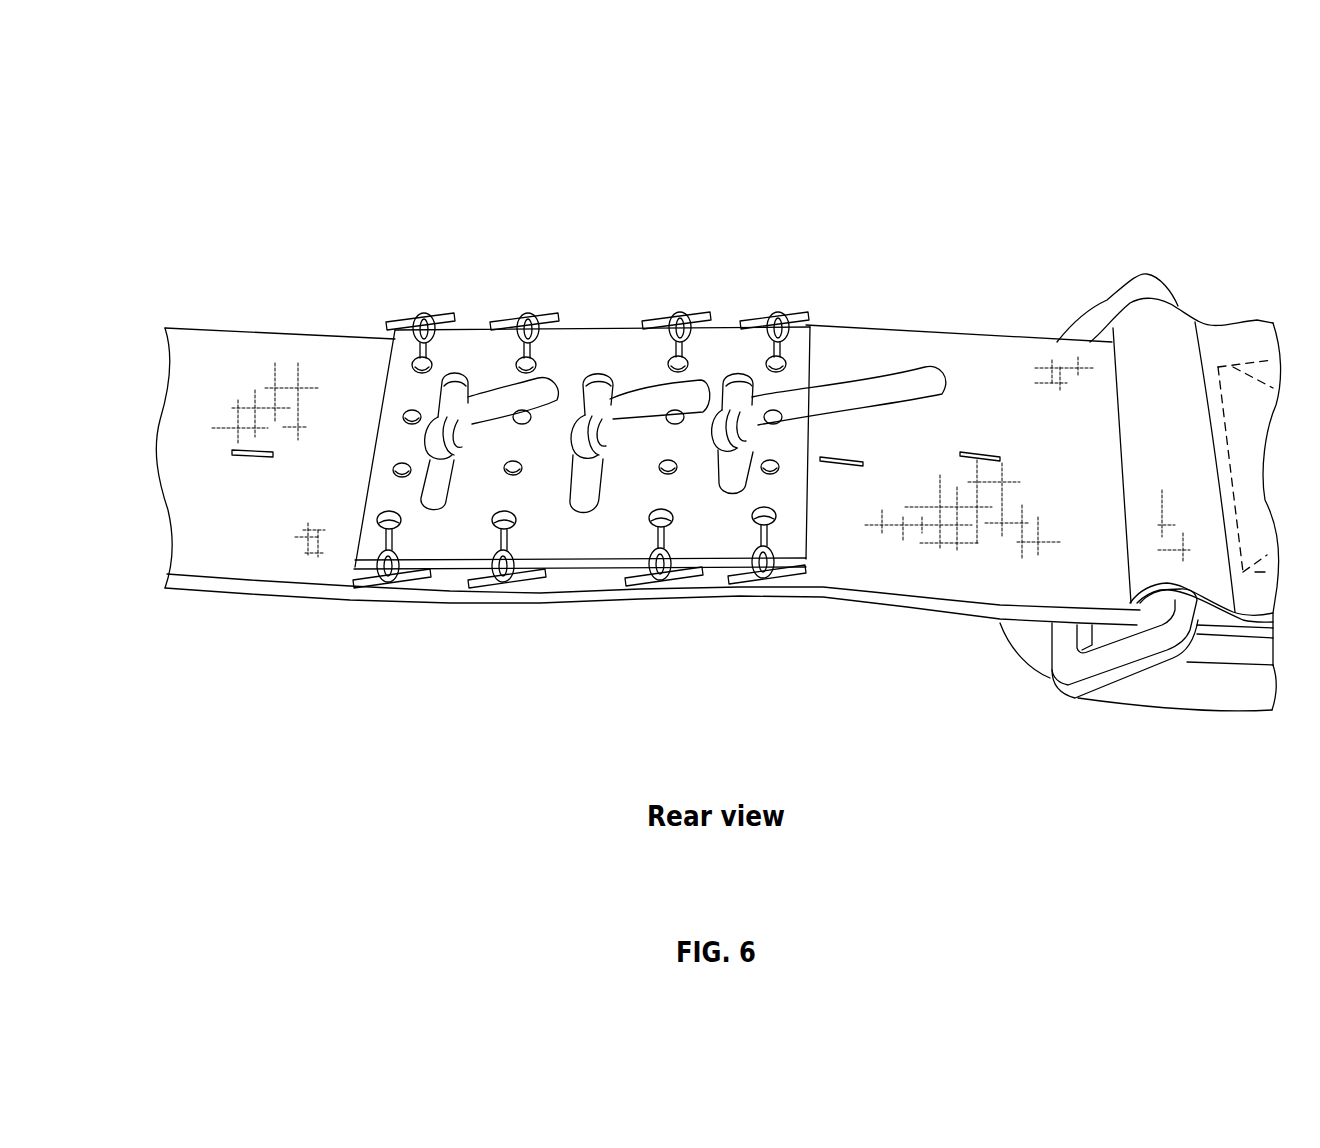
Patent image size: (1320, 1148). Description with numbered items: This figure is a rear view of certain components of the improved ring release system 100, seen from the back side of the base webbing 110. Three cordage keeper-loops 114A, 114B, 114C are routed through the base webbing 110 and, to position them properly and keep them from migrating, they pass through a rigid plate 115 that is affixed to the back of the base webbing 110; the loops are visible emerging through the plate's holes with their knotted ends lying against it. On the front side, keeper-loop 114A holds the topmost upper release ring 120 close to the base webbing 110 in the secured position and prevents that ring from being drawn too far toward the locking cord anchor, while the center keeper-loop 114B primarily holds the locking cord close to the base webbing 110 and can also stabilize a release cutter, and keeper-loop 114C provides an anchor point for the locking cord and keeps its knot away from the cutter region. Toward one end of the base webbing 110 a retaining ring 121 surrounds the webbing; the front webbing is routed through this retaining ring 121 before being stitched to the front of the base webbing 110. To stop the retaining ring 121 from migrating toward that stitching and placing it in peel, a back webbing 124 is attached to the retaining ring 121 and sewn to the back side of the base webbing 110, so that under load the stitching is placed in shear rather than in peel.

The ring release system 100 is at (280, 120).
The base webbing 110 is at (247, 530).
The keeper-loop 114A is at (816, 398).
The keeper-loop 114B is at (600, 378).
The keeper-loop 114C is at (442, 483).
The rigid plate 115 is at (467, 352).
The upper release ring 120 is at (1233, 680).
The retaining ring 121 is at (1090, 332).
The back webbing 124 is at (1190, 370).